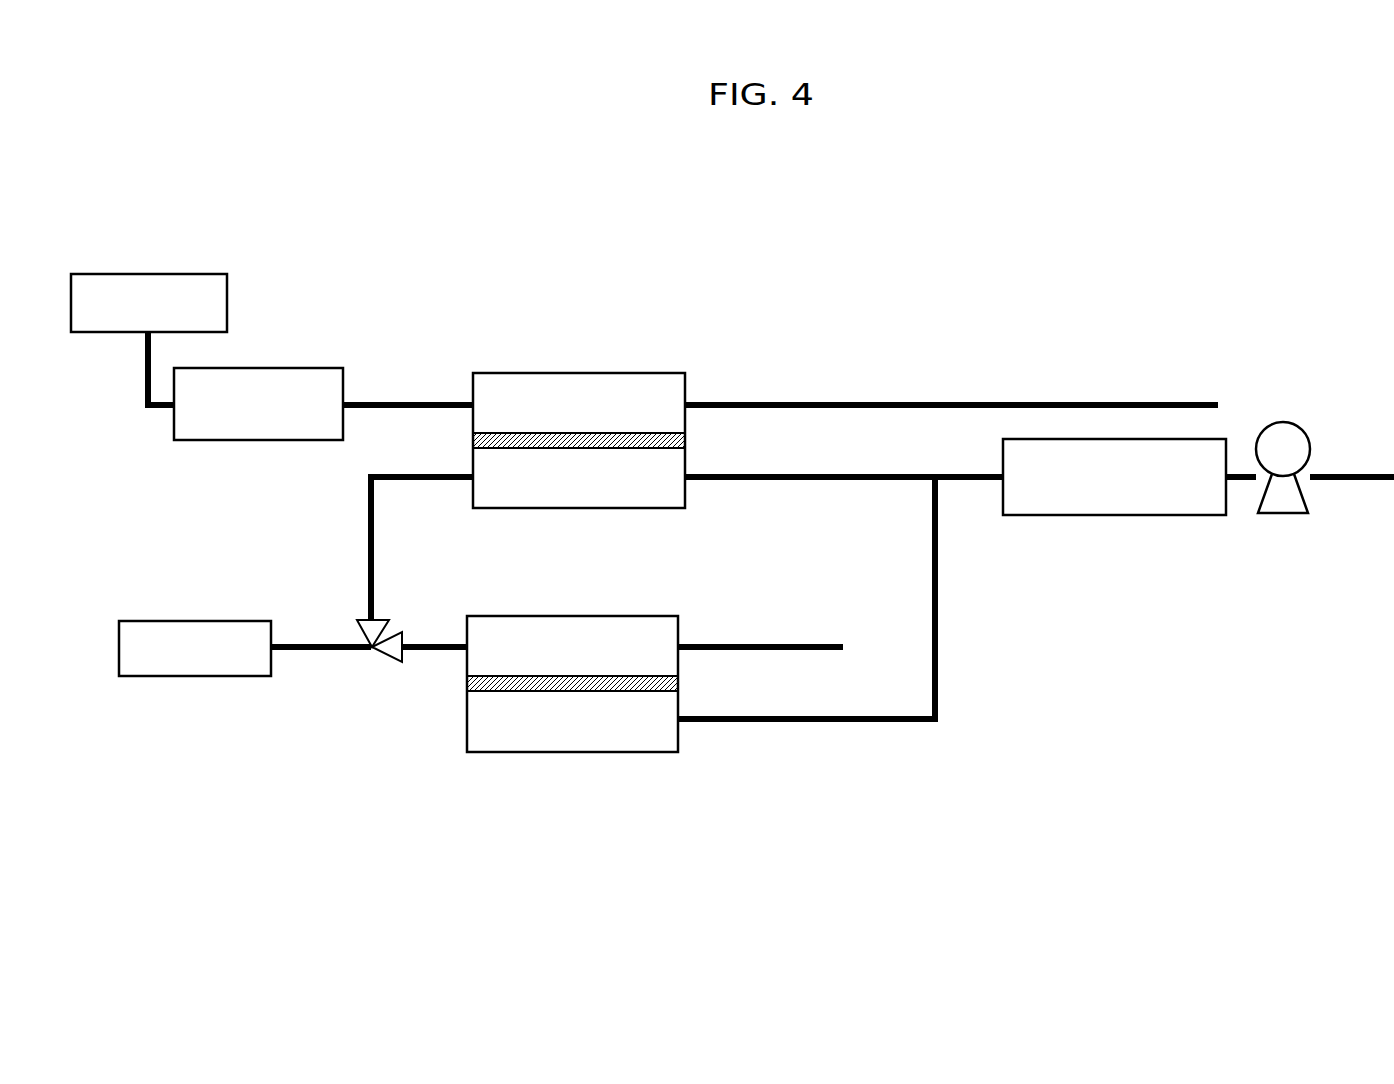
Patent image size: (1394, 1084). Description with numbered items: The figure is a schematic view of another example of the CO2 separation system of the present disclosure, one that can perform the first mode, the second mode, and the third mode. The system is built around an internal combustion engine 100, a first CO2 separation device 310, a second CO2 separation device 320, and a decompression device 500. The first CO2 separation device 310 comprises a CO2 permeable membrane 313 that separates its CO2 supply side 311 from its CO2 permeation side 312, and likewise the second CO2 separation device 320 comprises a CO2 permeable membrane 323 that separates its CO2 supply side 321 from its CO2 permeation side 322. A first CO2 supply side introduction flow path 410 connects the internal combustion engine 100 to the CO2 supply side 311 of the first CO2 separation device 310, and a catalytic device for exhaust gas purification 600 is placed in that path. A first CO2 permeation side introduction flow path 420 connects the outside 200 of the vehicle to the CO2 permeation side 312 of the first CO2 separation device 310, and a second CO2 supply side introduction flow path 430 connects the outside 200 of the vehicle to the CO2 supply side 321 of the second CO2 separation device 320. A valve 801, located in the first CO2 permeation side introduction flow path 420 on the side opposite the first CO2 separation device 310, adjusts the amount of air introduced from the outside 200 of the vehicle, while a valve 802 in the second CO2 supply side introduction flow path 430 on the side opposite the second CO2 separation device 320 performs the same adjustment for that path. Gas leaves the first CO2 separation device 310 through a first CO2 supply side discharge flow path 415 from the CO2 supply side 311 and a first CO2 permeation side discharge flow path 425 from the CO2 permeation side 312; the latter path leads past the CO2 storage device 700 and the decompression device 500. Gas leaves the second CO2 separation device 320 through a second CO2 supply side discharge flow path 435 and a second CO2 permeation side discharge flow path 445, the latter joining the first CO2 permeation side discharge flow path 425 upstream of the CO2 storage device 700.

The internal combustion engine 100 is at (167, 304).
The outside of the vehicle 200 is at (190, 657).
The first CO2 separation device 310 is at (597, 397).
The CO2 supply side 311 is at (622, 400).
The CO2 permeation side 312 is at (525, 475).
The CO2 permeable membrane 313 is at (668, 437).
The second CO2 separation device 320 is at (575, 720).
The CO2 supply side 321 is at (575, 652).
The CO2 permeation side 322 is at (500, 727).
The CO2 permeable membrane 323 is at (643, 677).
The first CO2 supply side introduction flow path 410 is at (370, 407).
The first CO2 supply side discharge flow path 415 is at (838, 405).
The first CO2 permeation side introduction flow path 420 is at (408, 477).
The first CO2 permeation side discharge flow path 425 is at (777, 477).
The second CO2 supply side introduction flow path 430 is at (436, 650).
The second CO2 supply side discharge flow path 435 is at (755, 642).
The second CO2 permeation side discharge flow path 445 is at (722, 722).
The decompression device 500 is at (1290, 445).
The catalytic device for exhaust gas purification 600 is at (226, 412).
The CO2 storage device 700 is at (1115, 473).
The valve 801 is at (363, 632).
The valve 802 is at (393, 658).